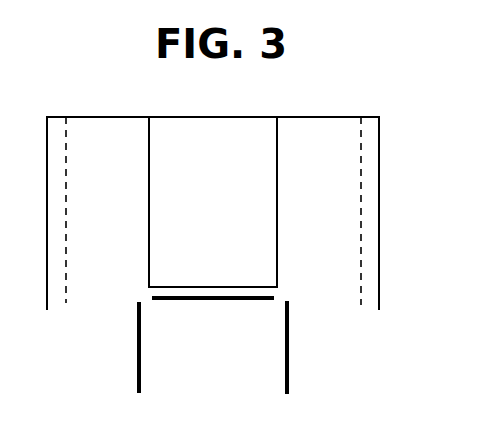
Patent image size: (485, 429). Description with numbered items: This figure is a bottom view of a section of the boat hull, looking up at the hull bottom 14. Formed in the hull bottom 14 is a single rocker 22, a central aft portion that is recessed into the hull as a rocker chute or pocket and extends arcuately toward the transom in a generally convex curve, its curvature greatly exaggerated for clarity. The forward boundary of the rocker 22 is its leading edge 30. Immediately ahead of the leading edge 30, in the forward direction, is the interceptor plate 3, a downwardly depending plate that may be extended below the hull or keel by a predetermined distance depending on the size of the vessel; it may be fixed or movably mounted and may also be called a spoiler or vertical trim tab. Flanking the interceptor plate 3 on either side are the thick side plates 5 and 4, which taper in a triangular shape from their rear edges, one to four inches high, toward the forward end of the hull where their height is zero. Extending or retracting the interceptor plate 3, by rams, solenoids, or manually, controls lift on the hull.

The hull bottom 14 is at (213, 213).
The rocker 22 is at (194, 156).
The leading edge 30 is at (212, 287).
The interceptor plate 3 is at (227, 303).
The first electrode 5 is at (138, 347).
The second electrode 4 is at (290, 347).